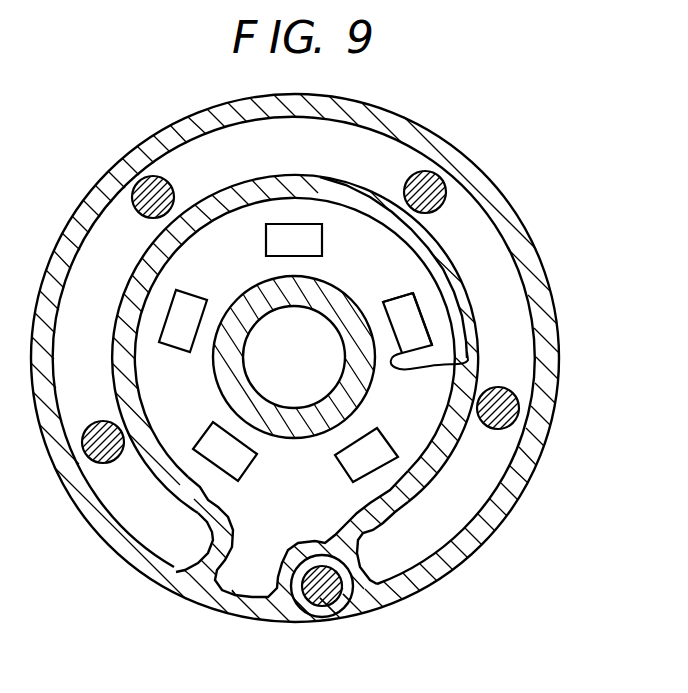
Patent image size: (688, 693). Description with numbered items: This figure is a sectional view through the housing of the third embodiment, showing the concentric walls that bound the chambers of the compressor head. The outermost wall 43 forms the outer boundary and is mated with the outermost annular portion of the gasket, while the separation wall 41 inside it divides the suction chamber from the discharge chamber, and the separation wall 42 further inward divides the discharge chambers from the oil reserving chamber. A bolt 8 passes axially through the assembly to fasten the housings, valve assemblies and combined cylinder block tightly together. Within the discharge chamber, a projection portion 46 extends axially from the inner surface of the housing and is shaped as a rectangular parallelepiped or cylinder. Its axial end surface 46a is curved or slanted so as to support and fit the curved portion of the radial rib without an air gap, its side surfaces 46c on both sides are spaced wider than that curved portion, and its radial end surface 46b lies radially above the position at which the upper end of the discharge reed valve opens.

The outermost wall 43 is at (408, 127).
The separation wall 41 is at (378, 197).
The separation wall 42 is at (348, 393).
The projection portion 46 is at (432, 337).
The axial end surface 46a is at (419, 318).
The radial end surface 46b is at (470, 357).
The side surface 46c is at (476, 238).
The bolt 8 is at (330, 590).